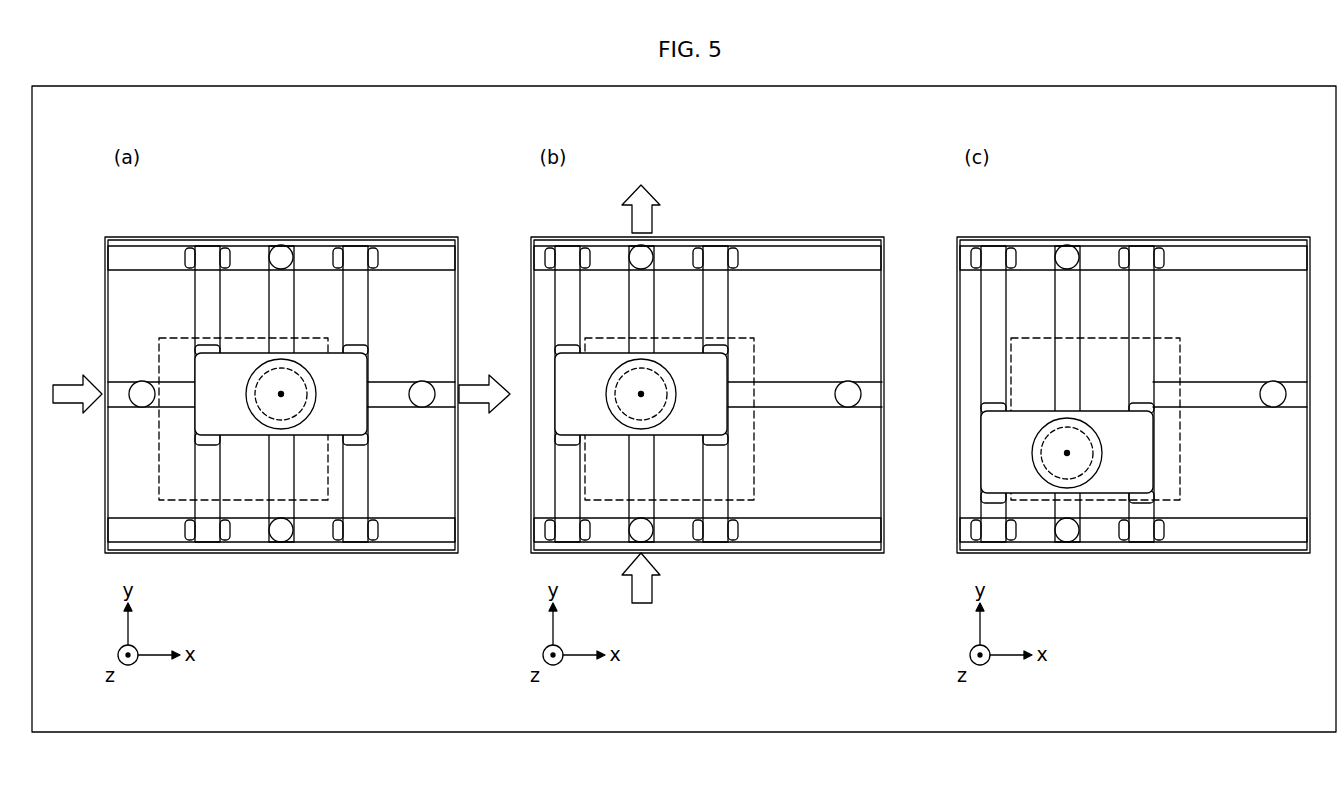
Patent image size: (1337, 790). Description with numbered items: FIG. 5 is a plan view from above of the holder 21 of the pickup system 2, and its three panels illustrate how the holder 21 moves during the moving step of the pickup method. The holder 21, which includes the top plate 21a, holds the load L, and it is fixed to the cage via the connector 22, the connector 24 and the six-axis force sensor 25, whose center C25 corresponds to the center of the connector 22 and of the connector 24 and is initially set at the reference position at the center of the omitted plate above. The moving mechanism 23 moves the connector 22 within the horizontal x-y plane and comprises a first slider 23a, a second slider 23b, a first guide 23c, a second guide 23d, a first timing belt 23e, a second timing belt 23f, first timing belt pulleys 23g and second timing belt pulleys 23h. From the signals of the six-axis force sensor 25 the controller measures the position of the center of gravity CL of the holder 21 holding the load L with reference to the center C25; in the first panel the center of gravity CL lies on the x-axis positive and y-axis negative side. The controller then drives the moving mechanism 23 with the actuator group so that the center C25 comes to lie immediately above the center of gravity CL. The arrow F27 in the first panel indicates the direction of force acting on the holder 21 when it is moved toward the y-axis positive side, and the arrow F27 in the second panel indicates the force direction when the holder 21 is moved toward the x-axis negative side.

The pickup system 2 is at (373, 191).
The holder 21 is at (424, 237).
The top plate 21a is at (398, 324).
The connector 22 is at (312, 413).
The moving mechanism 23 is at (707, 386).
The first slider 23a is at (195, 301).
The second slider 23b is at (245, 346).
The first guide 23c is at (192, 247).
The second guide 23d is at (368, 441).
The first timing belt 23e is at (379, 382).
The second timing belt 23f is at (293, 324).
The first timing belt pulleys 23g is at (142, 381).
The second timing belt pulleys 23h is at (281, 245).
The connector 24 is at (310, 399).
The six-axis force sensor 25 is at (316, 388).
The center of six-axis force sensor C25 is at (279, 393).
The center of gravity CL is at (214, 446).
The load L is at (158, 442).
The arrow indicating direction of force F27 is at (78, 377).